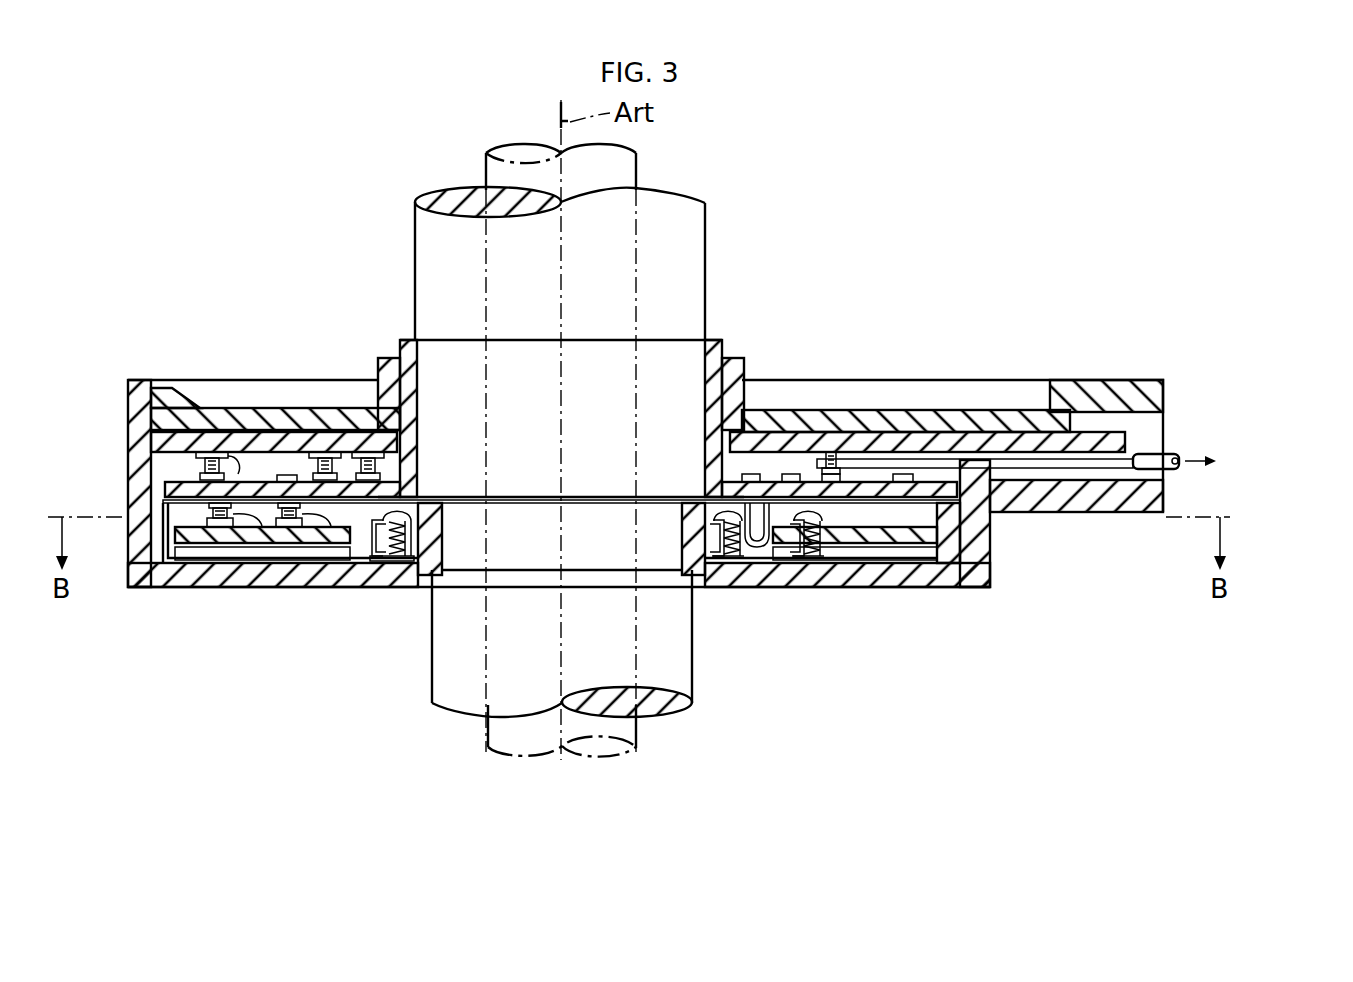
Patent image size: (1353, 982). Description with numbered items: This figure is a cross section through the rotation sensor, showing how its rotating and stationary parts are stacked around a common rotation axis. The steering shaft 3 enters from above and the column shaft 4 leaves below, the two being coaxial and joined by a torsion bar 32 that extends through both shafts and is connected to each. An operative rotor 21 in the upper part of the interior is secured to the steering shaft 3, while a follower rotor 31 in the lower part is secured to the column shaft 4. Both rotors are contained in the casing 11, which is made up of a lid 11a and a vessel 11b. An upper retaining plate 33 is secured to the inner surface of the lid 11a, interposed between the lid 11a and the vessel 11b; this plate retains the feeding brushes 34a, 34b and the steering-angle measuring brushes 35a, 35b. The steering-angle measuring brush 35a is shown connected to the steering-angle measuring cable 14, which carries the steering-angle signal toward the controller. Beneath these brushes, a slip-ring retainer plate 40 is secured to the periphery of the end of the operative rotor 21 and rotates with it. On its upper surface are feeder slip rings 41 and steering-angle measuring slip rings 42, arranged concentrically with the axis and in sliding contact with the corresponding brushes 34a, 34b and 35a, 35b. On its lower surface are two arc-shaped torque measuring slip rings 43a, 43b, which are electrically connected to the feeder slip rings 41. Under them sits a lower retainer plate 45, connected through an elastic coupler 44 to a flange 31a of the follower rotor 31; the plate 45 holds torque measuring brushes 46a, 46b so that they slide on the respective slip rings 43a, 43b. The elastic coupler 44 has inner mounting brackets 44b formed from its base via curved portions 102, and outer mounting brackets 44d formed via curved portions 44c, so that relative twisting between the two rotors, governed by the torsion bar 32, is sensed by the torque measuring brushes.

The steering shaft 3 is at (438, 240).
The column shaft 4 is at (448, 672).
The casing 11 is at (1165, 426).
The lid 11a is at (1080, 388).
The vessel 11b is at (960, 590).
The steering-angle measuring cable 14 is at (1168, 470).
The operative rotor 21 is at (712, 342).
The follower rotor 31 is at (702, 590).
The flange 31a is at (725, 585).
The torsion bar 32 is at (500, 731).
The upper retaining plate 33 is at (1108, 448).
The feeding brush 34a is at (360, 452).
The feeding brush 34b is at (316, 430).
The steering-angle measuring brush 35a is at (830, 468).
The steering-angle measuring brush 35b is at (199, 452).
The slip-ring retainer plate 40 is at (258, 476).
The feeder slip rings 41 is at (788, 474).
The steering-angle measuring slip rings 42 is at (822, 462).
The torque measuring slip ring 43a is at (286, 527).
The torque measuring slip ring 43b is at (207, 527).
The elastic coupler 44 is at (744, 513).
The inner mounting brackets 44b is at (402, 560).
The curved portions 44c is at (753, 590).
The outer mounting brackets 44d is at (810, 586).
The lower retainer plate 45 is at (346, 562).
The torque measuring brush 46a is at (322, 528).
The torque measuring brush 46b is at (243, 527).
The curved portions 102 is at (378, 561).